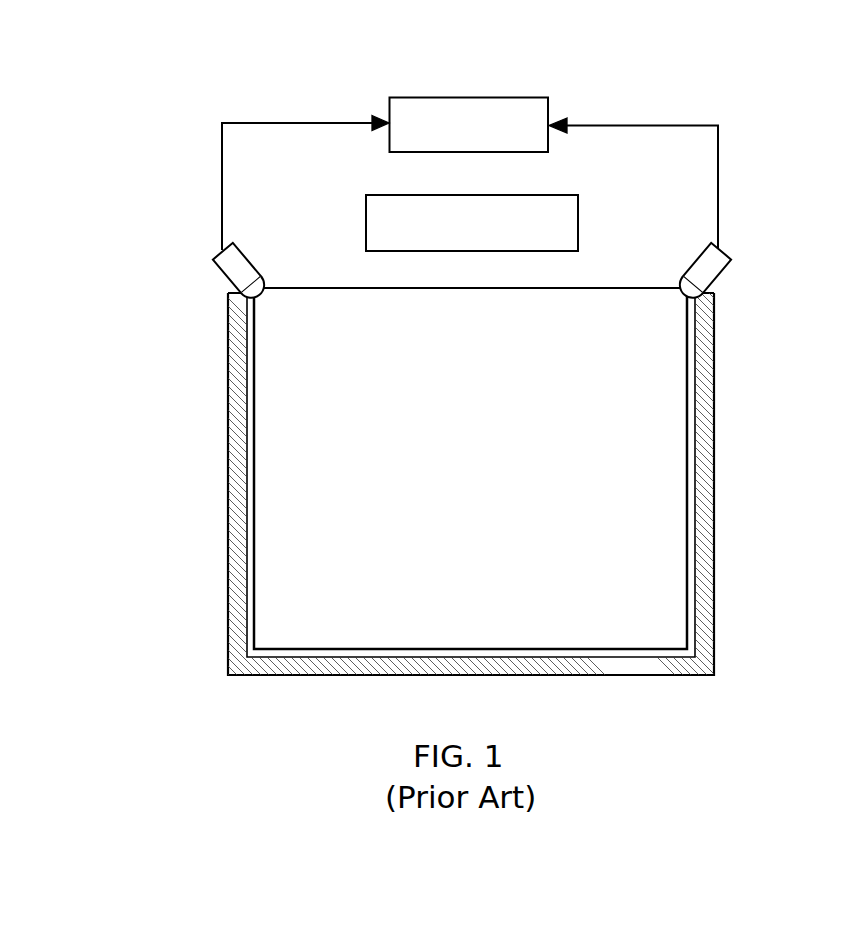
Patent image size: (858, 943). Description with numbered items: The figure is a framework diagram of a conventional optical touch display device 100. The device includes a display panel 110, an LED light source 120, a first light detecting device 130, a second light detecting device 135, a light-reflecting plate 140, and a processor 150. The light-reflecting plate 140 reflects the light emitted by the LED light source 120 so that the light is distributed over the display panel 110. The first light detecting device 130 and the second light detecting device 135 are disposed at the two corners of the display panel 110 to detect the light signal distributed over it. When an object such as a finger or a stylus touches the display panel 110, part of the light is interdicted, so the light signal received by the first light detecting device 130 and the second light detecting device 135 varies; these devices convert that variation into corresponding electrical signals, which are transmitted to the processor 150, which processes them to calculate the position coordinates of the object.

The optical touch display device 100 is at (142, 54).
The display panel 110 is at (358, 288).
The LED light source 120 is at (578, 242).
The first light detecting device 130 is at (232, 281).
The second light detecting device 135 is at (725, 272).
The light-reflecting plate 140 is at (714, 509).
The processor 150 is at (535, 97).